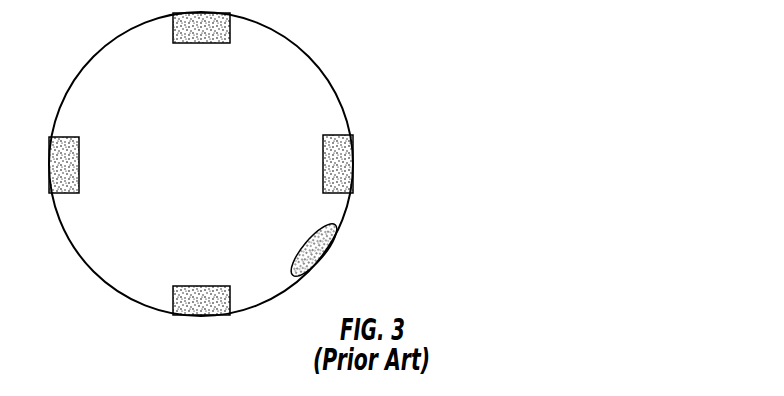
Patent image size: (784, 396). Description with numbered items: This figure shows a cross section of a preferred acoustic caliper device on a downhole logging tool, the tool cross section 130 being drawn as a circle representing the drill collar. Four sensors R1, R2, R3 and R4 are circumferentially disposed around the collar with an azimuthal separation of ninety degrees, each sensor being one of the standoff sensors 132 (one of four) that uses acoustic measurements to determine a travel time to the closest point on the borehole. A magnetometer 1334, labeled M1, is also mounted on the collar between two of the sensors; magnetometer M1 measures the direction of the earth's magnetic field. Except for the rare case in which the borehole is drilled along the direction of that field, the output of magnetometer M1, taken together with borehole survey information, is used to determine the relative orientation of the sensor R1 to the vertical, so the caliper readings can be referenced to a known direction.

The tool cross section 130 is at (298, 41).
The standoff sensor (1 of 4) 132 is at (336, 133).
The magnetometer 1334 is at (333, 221).
The sensor R1 is at (201, 286).
The sensor R2 is at (80, 165).
The sensor R3 is at (201, 43).
The sensor R4 is at (307, 162).
The magnetometer M1 is at (336, 272).